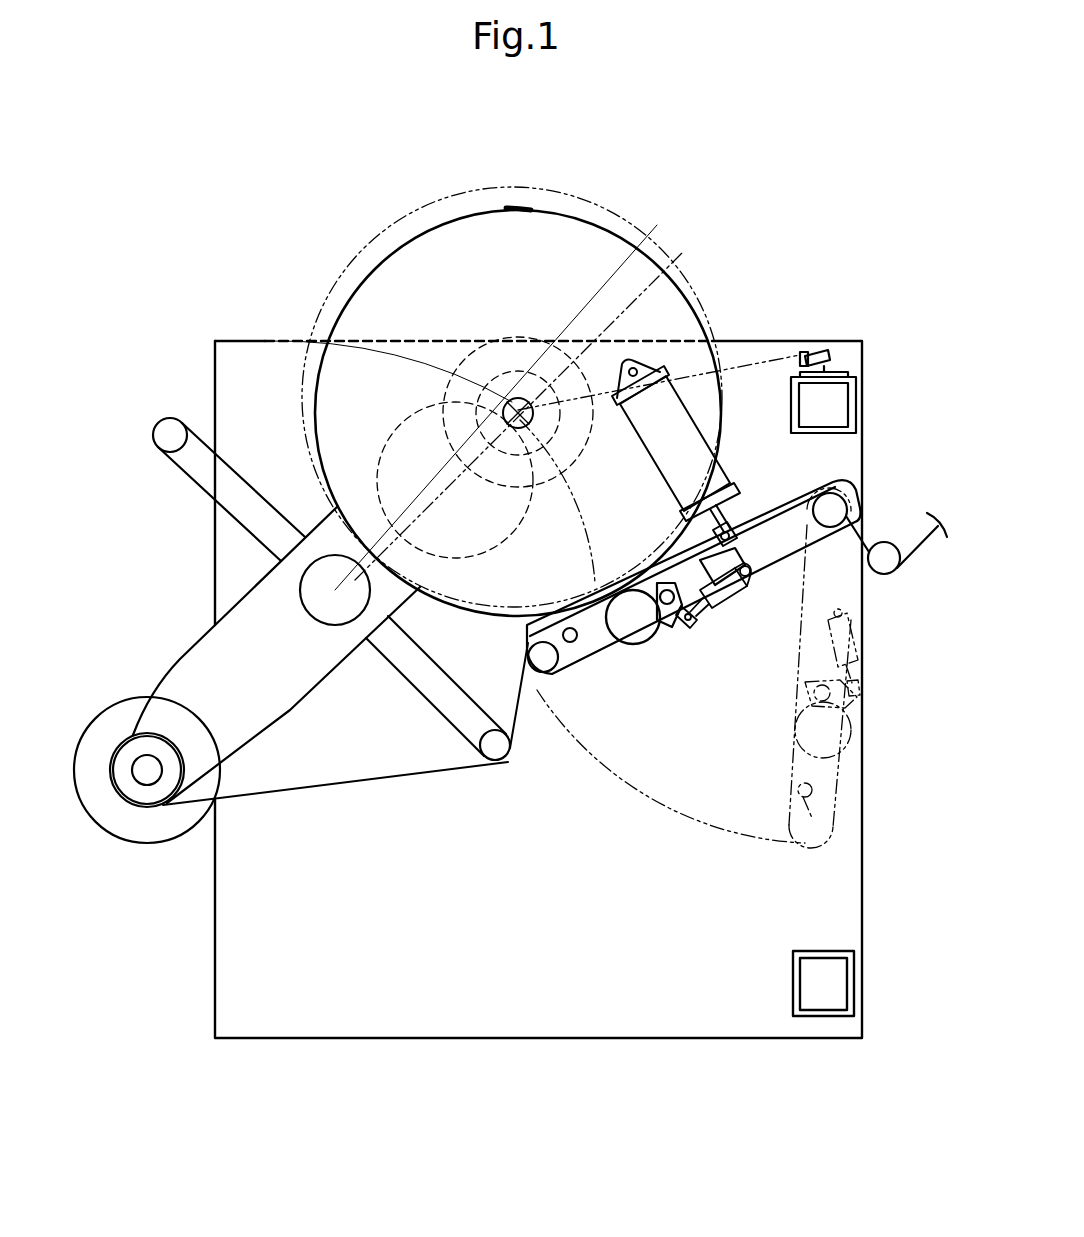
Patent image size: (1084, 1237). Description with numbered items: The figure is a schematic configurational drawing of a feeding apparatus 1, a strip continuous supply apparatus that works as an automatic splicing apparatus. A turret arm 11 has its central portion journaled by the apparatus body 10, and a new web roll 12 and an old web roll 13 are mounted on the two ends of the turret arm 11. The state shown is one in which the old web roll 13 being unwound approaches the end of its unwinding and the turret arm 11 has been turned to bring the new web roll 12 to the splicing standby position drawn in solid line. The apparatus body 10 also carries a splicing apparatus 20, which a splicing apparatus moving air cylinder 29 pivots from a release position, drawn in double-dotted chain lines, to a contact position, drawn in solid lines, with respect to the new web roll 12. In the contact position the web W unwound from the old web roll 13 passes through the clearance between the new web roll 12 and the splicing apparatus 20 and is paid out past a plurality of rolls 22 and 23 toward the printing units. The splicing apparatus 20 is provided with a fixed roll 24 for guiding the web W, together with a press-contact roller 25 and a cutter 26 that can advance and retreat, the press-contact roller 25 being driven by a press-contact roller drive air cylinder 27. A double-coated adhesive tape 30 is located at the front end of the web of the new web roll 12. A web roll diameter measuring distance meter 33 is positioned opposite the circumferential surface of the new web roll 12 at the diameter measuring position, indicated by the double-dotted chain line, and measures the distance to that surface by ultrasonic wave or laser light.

The feeding apparatus 1 is at (243, 338).
The apparatus body 10 is at (320, 1040).
The turret arm 11 is at (188, 652).
The new web roll 12 is at (624, 238).
The old web roll 13 is at (148, 810).
The splicing apparatus 20 is at (611, 652).
The roll 22 is at (849, 496).
The roll 23 is at (892, 542).
The fixed roll 24 is at (536, 680).
The press-contact roller 25 is at (652, 645).
The cutter 26 is at (574, 644).
The press-contact roller drive air cylinder 27 is at (733, 605).
The splicing apparatus moving air cylinder 29 is at (710, 410).
The double-coated adhesive tape 30 is at (519, 206).
The web roll diameter measuring distance meter 33 is at (813, 348).
The web W is at (387, 782).